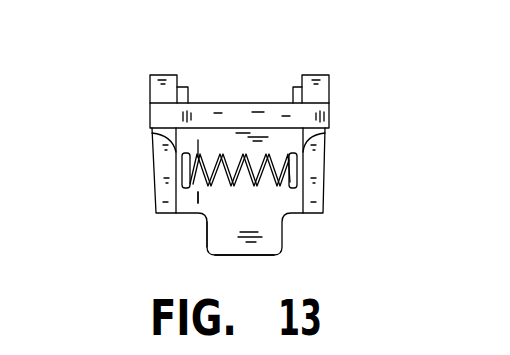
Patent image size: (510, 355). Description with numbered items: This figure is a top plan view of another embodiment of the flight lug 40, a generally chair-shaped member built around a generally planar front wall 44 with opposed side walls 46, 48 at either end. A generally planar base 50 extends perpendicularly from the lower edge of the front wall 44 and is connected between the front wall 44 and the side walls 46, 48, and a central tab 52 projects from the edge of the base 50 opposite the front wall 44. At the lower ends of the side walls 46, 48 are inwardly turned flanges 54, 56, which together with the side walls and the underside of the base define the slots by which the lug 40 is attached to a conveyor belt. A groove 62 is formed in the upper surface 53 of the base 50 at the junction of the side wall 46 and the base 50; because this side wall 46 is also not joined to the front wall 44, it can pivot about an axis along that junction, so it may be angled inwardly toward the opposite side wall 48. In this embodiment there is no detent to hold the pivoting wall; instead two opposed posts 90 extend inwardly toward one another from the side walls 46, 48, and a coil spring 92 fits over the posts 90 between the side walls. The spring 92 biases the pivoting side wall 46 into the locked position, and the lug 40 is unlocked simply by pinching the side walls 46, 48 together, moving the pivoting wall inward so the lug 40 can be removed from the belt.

The flight lug 40 is at (343, 72).
The front wall 44 is at (248, 108).
The side wall 46 is at (162, 170).
The side wall 48 is at (322, 170).
The base 50 is at (284, 233).
The central tab 52 is at (257, 257).
The upper surface 53 is at (205, 235).
The flange 54 is at (185, 87).
The flange 56 is at (293, 87).
The groove 62 is at (184, 206).
The post 90 is at (152, 134).
The coil spring 92 is at (254, 185).